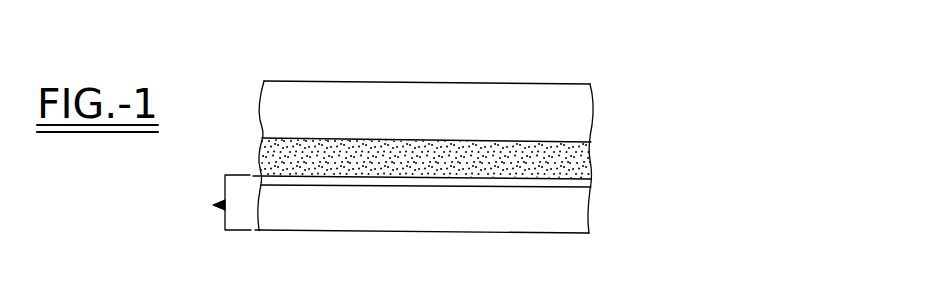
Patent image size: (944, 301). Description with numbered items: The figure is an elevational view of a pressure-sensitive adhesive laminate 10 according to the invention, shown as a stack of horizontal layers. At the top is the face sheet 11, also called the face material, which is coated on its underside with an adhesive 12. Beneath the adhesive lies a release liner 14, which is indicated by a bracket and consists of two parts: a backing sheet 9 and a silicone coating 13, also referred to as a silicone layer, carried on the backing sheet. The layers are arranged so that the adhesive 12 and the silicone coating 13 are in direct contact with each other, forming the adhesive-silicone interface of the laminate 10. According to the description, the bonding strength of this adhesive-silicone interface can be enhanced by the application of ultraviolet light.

The backing sheet 9 is at (580, 219).
The laminate 10 is at (537, 76).
The face sheet 11 is at (587, 116).
The adhesive 12 is at (583, 160).
The silicone coating 13 is at (585, 185).
The release liner 14 is at (223, 202).